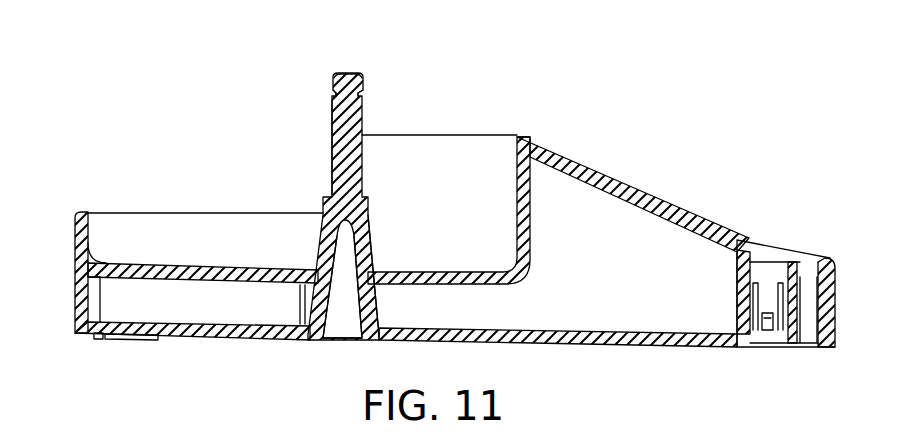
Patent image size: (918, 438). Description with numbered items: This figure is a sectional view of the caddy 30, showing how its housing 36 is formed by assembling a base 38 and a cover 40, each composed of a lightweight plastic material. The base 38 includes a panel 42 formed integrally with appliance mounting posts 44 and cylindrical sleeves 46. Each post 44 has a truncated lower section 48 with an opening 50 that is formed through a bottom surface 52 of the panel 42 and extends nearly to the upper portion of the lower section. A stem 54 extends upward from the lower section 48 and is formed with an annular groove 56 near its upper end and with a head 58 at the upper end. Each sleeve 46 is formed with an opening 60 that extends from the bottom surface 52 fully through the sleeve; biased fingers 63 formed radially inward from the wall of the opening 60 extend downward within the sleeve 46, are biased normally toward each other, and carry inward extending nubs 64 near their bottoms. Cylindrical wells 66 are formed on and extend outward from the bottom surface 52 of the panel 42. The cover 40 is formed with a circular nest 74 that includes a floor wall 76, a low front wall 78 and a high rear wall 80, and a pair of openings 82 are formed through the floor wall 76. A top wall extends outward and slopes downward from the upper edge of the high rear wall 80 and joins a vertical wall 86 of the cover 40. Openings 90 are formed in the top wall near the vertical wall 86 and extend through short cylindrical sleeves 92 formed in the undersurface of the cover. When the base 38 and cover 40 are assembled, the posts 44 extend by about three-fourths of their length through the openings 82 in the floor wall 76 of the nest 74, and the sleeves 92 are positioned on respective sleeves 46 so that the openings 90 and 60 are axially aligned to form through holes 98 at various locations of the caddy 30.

The caddy 30 is at (762, 76).
The housing 36 is at (612, 100).
The base 38 is at (657, 350).
The cover 40 is at (645, 195).
The panel 42 is at (92, 340).
The appliance mounting post 44 is at (330, 150).
The cylindrical sleeve 46 is at (813, 295).
The truncated lower section 48 is at (364, 262).
The opening 50 is at (337, 322).
The bottom surface 52 is at (595, 345).
The stem 54 is at (356, 130).
The annular groove 56 is at (363, 90).
The head 58 is at (346, 75).
The opening 60 is at (773, 347).
The biased finger 63 is at (800, 272).
The nub 64 is at (762, 332).
The cylindrical well 66 is at (160, 338).
The circular nest 74 is at (165, 240).
The floor wall 76 is at (133, 262).
The low front wall 78 is at (80, 228).
The high rear wall 80 is at (460, 148).
The opening 82 is at (318, 275).
The vertical wall 86 is at (836, 300).
The opening 90 is at (779, 283).
The short cylindrical sleeve 92 is at (736, 255).
The through hole 98 is at (757, 232).